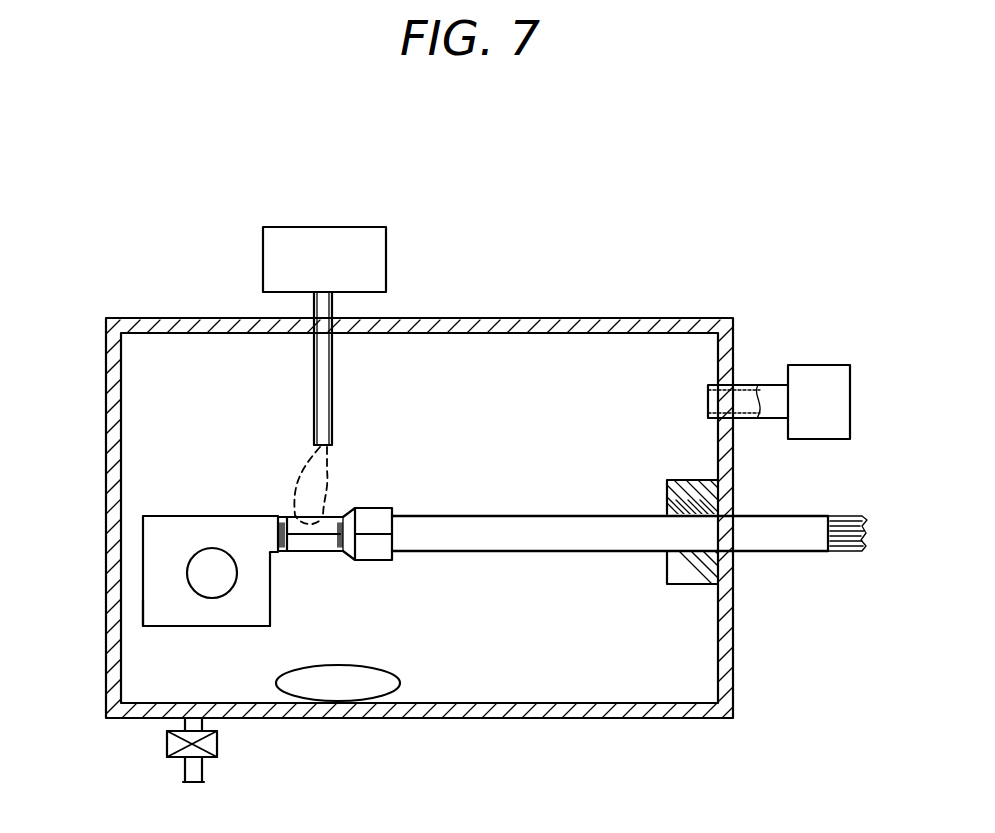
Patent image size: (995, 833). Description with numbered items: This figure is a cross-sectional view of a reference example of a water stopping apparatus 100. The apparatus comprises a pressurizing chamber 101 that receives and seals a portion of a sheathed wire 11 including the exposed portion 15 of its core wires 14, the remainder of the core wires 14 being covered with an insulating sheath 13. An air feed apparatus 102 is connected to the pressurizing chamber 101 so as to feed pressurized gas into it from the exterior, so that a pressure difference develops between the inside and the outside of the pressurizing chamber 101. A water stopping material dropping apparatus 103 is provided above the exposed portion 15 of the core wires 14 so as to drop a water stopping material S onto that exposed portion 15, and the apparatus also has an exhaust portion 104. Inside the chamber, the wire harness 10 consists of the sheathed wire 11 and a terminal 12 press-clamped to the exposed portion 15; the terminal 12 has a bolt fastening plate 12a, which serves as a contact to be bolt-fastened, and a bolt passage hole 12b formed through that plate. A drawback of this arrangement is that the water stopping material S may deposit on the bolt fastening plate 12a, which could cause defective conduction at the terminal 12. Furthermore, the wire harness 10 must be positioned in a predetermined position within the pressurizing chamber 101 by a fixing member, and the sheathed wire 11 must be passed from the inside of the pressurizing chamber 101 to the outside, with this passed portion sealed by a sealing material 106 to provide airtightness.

The water stopping apparatus 100 is at (578, 226).
The pressurizing chamber 101 is at (700, 308).
The air feed apparatus 102 is at (821, 370).
The water stopping material dropping apparatus 103 is at (330, 245).
The exhaust portion 104 is at (166, 742).
The sealing material 106 is at (678, 468).
The wire harness 10 is at (592, 505).
The sheathed wire 11 is at (568, 554).
The terminal 12 is at (207, 532).
The bolt fastening plate 12a is at (188, 610).
The bolt passage hole 12b is at (190, 572).
The insulating sheath 13 is at (525, 517).
The core wires 14 is at (849, 553).
The exposed portion 15 is at (254, 484).
The water stopping material S is at (326, 515).